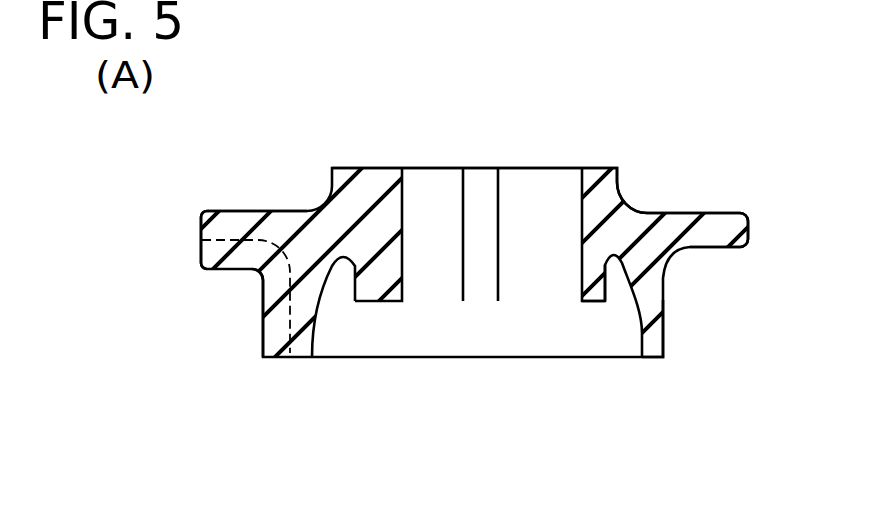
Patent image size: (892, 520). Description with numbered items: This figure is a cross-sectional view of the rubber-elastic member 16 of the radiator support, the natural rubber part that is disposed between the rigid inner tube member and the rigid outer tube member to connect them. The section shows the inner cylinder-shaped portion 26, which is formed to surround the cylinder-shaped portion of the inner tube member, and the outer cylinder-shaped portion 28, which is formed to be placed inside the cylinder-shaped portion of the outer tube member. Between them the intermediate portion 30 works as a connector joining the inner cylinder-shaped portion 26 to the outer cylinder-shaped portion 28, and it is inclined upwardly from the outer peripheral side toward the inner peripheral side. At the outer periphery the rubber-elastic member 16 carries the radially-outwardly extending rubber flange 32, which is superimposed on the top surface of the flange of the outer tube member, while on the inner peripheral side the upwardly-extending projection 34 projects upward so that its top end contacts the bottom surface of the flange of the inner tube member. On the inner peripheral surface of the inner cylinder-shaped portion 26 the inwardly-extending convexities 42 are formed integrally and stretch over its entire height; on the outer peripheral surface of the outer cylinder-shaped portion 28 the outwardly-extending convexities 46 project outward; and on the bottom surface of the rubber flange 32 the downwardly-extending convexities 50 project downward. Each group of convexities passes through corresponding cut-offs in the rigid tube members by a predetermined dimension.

The rubber-elastic member 16 is at (670, 133).
The inner cylinder-shaped portion 26 is at (593, 295).
The outer cylinder-shaped portion 28 is at (652, 343).
The intermediate portion 30 is at (628, 219).
The rubber flange 32 is at (723, 223).
The upwardly-extending projection 34 is at (613, 188).
The inwardly-extending convexities 42 is at (403, 218).
The outwardly-extending convexities 46 is at (268, 322).
The downwardly-extending convexities 50 is at (208, 254).